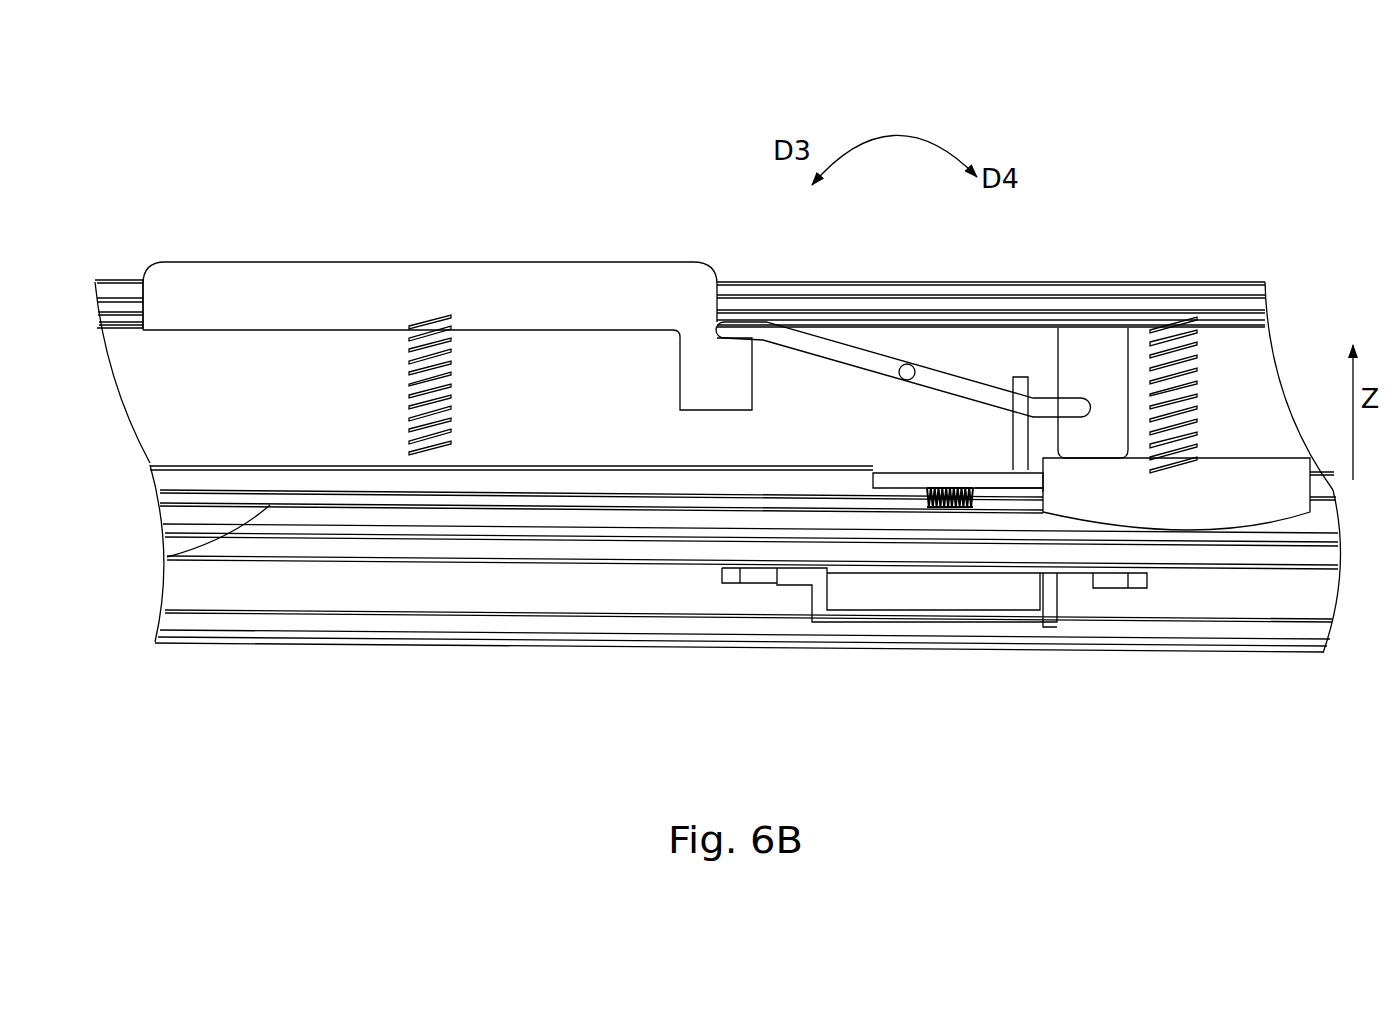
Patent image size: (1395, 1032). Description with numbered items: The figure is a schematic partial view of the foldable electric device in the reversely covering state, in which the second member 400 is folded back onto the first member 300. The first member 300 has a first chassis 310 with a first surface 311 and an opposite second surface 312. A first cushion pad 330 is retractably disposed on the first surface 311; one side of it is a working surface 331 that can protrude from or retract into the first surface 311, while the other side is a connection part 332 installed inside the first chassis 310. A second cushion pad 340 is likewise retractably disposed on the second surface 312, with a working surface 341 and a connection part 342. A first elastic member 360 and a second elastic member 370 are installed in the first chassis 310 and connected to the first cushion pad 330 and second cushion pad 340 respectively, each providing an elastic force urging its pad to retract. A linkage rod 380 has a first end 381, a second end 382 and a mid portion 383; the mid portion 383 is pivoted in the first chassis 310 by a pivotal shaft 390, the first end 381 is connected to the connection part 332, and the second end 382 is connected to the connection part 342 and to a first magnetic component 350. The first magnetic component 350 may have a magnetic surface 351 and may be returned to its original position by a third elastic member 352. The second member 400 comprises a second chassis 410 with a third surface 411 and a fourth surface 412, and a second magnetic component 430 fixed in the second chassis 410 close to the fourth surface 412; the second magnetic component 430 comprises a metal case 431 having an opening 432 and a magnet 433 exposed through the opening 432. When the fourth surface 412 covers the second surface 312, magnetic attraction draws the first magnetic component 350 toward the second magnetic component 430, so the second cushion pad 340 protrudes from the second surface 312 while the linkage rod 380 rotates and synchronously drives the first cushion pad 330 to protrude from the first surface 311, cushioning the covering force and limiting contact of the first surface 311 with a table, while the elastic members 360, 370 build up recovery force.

The first member 300 is at (190, 182).
The first chassis 310 is at (113, 393).
The first surface 311 is at (116, 278).
The second surface 312 is at (167, 555).
The first cushion pad 330 is at (543, 172).
The working surface 331 is at (553, 268).
The connection part 332 is at (707, 363).
The second cushion pad 340 is at (1112, 218).
The working surface 341 is at (1283, 480).
The connection part 342 is at (1110, 342).
The first magnetic component 350 is at (870, 480).
The magnetic surface 351 is at (1005, 492).
The third elastic member 352 is at (950, 505).
The first elastic member 360 is at (432, 446).
The second elastic member 370 is at (1197, 428).
The linkage rod 380 is at (851, 340).
The first end 381 is at (762, 322).
The second end 382 is at (1075, 400).
The mid portion 383 is at (976, 388).
The pivotal shaft 390 is at (905, 365).
The second member 400 is at (1197, 677).
The second chassis 410 is at (648, 594).
The third surface 411 is at (1250, 655).
The fourth surface 412 is at (1320, 516).
The second magnetic component 430 is at (845, 628).
The metal case 431 is at (1113, 590).
The opening 432 is at (1000, 568).
The magnet 433 is at (975, 600).